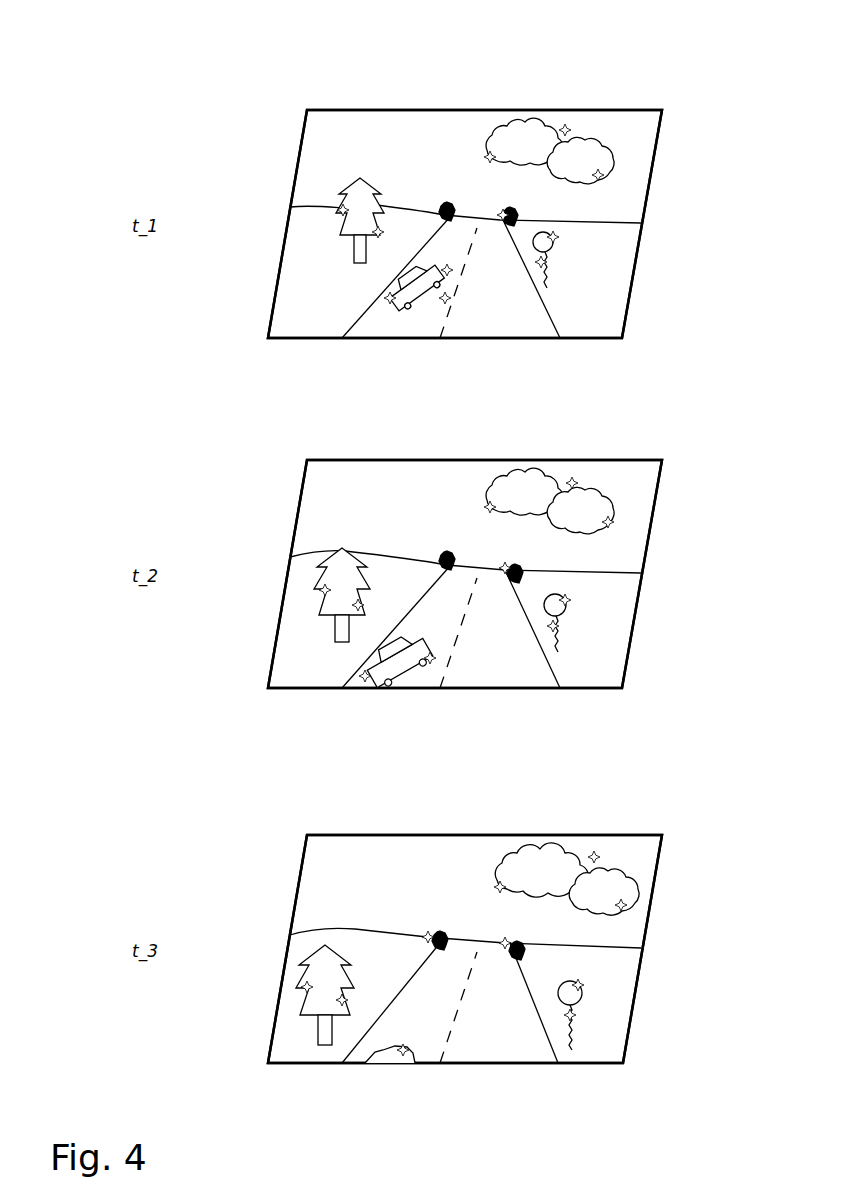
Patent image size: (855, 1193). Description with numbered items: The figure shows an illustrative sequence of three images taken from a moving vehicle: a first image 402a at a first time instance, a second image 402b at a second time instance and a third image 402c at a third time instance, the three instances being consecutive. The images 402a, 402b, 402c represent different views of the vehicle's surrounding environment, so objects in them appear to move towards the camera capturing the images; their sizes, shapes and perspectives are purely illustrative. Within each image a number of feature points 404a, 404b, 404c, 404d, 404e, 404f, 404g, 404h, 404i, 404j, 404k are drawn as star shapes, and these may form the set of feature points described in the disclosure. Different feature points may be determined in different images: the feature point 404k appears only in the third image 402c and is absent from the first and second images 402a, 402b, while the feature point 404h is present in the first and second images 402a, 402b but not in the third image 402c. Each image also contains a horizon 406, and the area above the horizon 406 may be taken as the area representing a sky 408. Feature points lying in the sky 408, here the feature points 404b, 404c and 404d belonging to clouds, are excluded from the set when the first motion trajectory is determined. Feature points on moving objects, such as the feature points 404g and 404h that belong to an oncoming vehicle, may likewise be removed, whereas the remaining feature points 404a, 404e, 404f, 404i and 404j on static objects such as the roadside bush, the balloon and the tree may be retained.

The first image 402a is at (722, 78).
The second image 402b is at (734, 440).
The third image 402c is at (726, 815).
The feature point 404a is at (503, 212).
The feature point 404b is at (490, 155).
The feature point 404c is at (565, 130).
The feature point 404d is at (598, 175).
The feature point 404e is at (553, 237).
The feature point 404f is at (548, 262).
The feature point 404g is at (447, 300).
The feature point 404h is at (390, 300).
The feature point 404i is at (345, 233).
The feature point 404j is at (340, 210).
The feature point 404k is at (427, 936).
The horizon 406 is at (343, 208).
The area representing a sky 408 is at (324, 120).